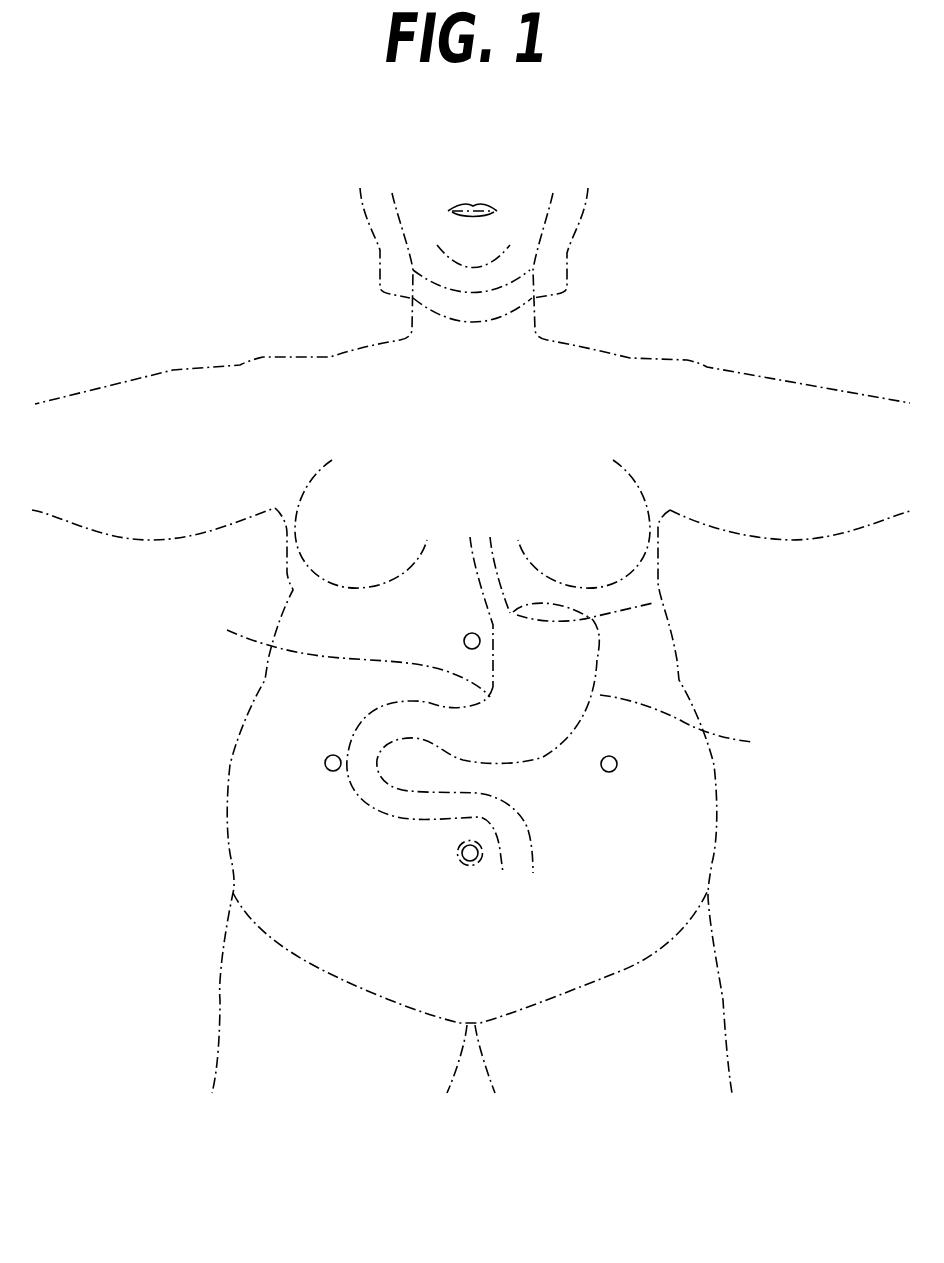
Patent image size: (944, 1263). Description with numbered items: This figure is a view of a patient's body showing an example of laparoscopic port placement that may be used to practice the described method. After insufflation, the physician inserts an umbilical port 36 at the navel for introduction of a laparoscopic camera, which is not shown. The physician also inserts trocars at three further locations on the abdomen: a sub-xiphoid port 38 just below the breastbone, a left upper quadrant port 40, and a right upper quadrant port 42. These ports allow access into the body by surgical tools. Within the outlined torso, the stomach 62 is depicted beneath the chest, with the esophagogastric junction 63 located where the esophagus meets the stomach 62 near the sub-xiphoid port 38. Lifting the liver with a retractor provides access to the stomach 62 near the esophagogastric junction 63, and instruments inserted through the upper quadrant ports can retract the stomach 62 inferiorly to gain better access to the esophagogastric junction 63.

The umbilical port 36 is at (479, 853).
The sub-xiphoid port 38 is at (480, 638).
The left upper quadrant port 40 is at (618, 762).
The right upper quadrant port 42 is at (324, 762).
The stomach 62 is at (492, 686).
The esophagogastric junction 63 is at (653, 603).